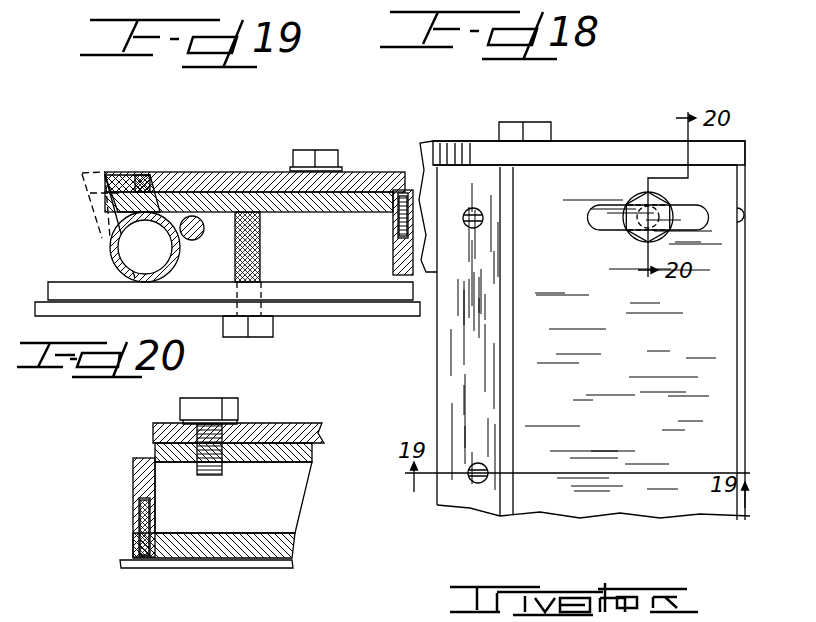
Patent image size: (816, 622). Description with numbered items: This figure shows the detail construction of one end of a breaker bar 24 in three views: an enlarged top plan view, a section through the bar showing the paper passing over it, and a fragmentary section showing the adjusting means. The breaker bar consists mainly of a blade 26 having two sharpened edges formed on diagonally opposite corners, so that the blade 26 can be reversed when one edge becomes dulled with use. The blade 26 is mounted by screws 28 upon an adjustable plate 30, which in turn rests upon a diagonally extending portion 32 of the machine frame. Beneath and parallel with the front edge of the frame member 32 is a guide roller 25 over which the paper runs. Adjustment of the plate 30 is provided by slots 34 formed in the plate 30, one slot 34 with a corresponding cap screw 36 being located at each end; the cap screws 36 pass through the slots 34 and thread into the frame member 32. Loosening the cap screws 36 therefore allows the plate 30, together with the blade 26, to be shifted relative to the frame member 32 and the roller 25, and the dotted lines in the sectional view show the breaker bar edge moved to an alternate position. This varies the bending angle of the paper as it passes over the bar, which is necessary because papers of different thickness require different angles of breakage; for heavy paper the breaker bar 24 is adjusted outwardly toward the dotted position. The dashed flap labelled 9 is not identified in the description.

In FIG. 19, the apron plate 9 is at (103, 226).
In FIG. 18, the breaker bar 24 is at (623, 345).
In FIG. 19, the guide roller 25 is at (180, 263).
In FIG. 19, the blade 26 is at (112, 172).
In FIG. 18, the blade 26 is at (440, 386).
In FIG. 19, the screws 28 is at (138, 172).
In FIG. 18, the screws 28 is at (473, 208).
In FIG. 19, the adjustable plate 30 is at (240, 190).
In FIG. 18, the adjustable plate 30 is at (567, 203).
In FIG. 20, the adjustable plate 30 is at (258, 436).
In FIG. 19, the diagonally extending portion of the frame 32 is at (284, 213).
In FIG. 20, the diagonally extending portion of the frame 32 is at (250, 463).
In FIG. 18, the slots 34 is at (600, 230).
In FIG. 19, the cap screws 36 is at (328, 153).
In FIG. 18, the cap screws 36 is at (627, 229).
In FIG. 20, the cap screws 36 is at (216, 406).